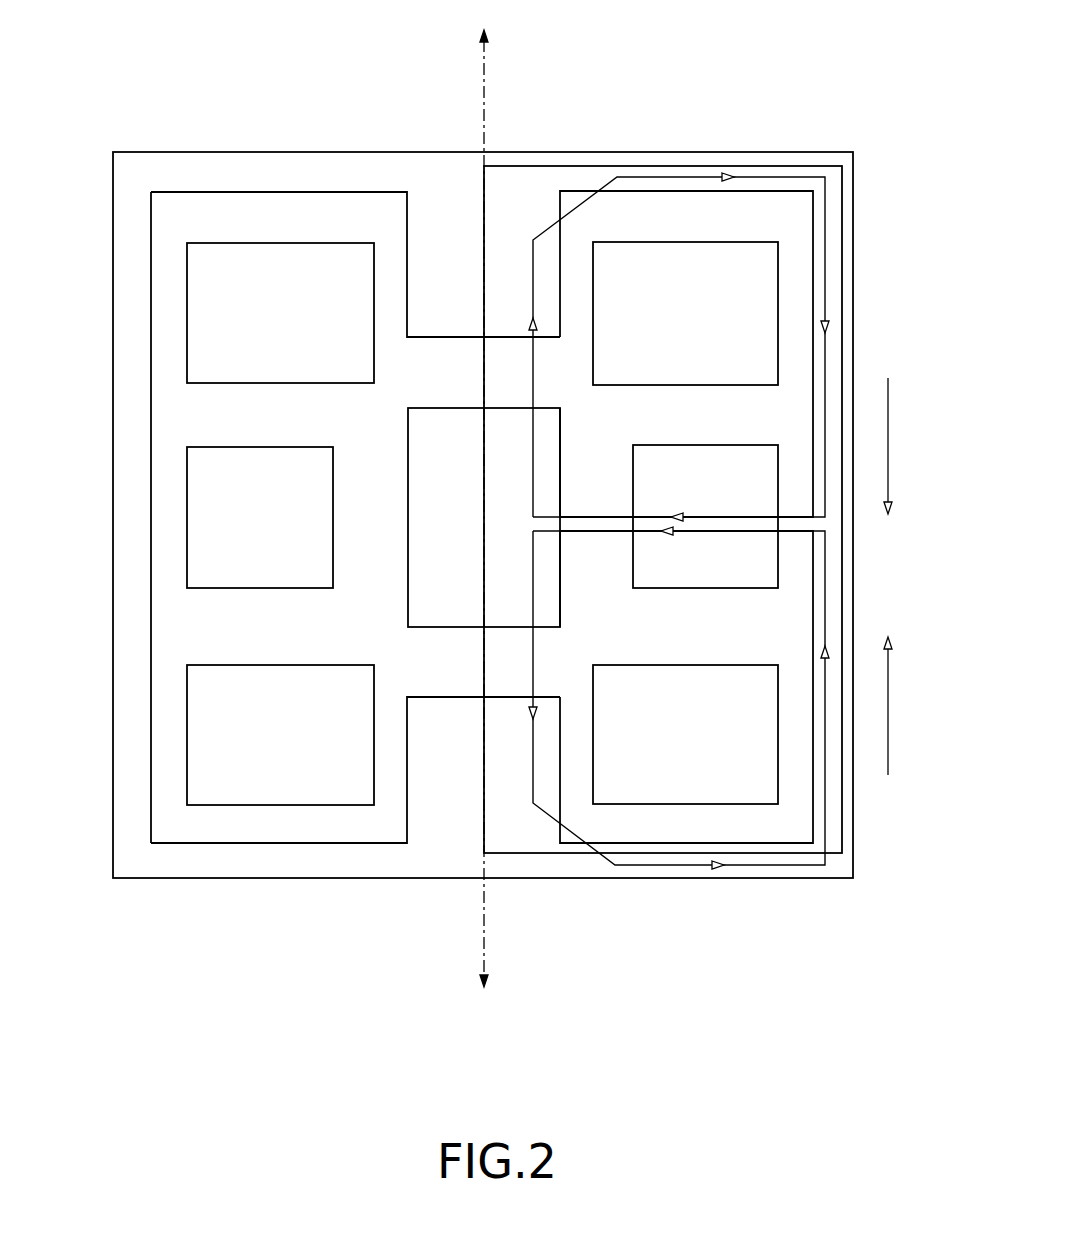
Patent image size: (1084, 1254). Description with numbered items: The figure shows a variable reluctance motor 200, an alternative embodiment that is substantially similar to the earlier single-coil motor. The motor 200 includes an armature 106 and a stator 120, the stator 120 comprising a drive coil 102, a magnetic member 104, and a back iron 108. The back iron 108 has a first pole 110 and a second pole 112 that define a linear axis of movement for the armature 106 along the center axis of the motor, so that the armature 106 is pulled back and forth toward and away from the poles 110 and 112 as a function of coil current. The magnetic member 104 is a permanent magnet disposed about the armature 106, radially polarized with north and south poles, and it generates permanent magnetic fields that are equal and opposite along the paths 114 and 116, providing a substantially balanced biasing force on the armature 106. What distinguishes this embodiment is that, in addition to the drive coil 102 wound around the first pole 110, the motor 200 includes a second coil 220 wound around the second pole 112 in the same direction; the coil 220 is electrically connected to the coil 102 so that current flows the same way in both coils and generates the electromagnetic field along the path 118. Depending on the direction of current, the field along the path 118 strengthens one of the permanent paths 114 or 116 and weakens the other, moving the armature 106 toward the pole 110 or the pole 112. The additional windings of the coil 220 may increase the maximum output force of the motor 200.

The motor 200 is at (322, 113).
The back iron 108 is at (113, 396).
The electromagnetic circuit path 118 is at (845, 317).
The second pole 112 is at (460, 252).
The first pole 110 is at (460, 760).
The armature 106 is at (423, 408).
The second coil 220 is at (303, 372).
The magnetic member 104 is at (280, 578).
The drive coil 102 is at (303, 795).
The stator 120 is at (187, 562).
The permanent magnetic field path 114 is at (533, 360).
The permanent magnetic field path 116 is at (533, 643).